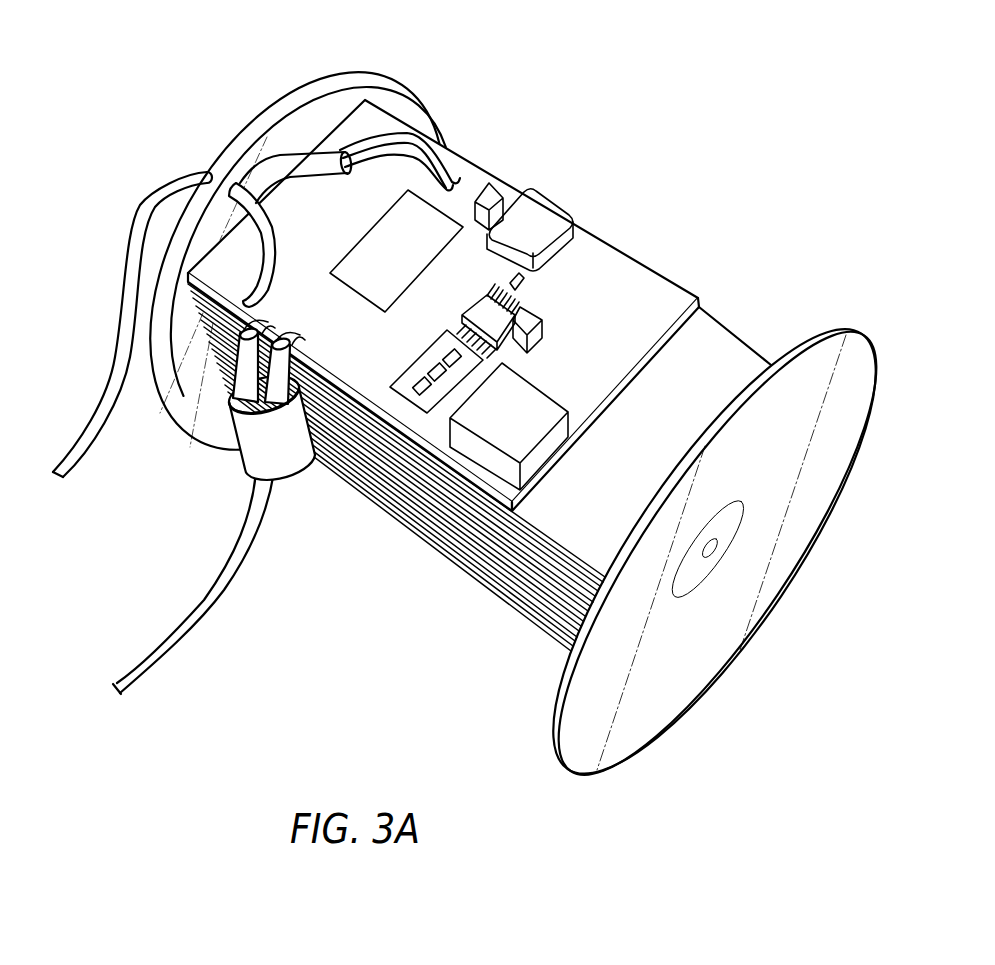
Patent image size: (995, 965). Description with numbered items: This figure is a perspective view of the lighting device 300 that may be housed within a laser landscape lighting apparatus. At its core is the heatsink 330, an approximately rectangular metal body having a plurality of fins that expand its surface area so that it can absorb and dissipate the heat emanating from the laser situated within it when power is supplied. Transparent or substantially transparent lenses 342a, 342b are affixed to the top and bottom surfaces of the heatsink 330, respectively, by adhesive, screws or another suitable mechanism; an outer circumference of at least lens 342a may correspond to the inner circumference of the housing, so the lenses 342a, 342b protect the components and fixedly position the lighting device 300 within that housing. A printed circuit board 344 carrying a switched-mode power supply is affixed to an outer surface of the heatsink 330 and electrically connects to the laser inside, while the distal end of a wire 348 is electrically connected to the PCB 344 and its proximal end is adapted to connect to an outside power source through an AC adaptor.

The lighting device 300 is at (490, 430).
The heatsink 330 is at (427, 520).
The lens 342a is at (648, 707).
The lens 342b is at (258, 123).
The printed circuit board 344 is at (250, 297).
The wire 348 is at (183, 630).